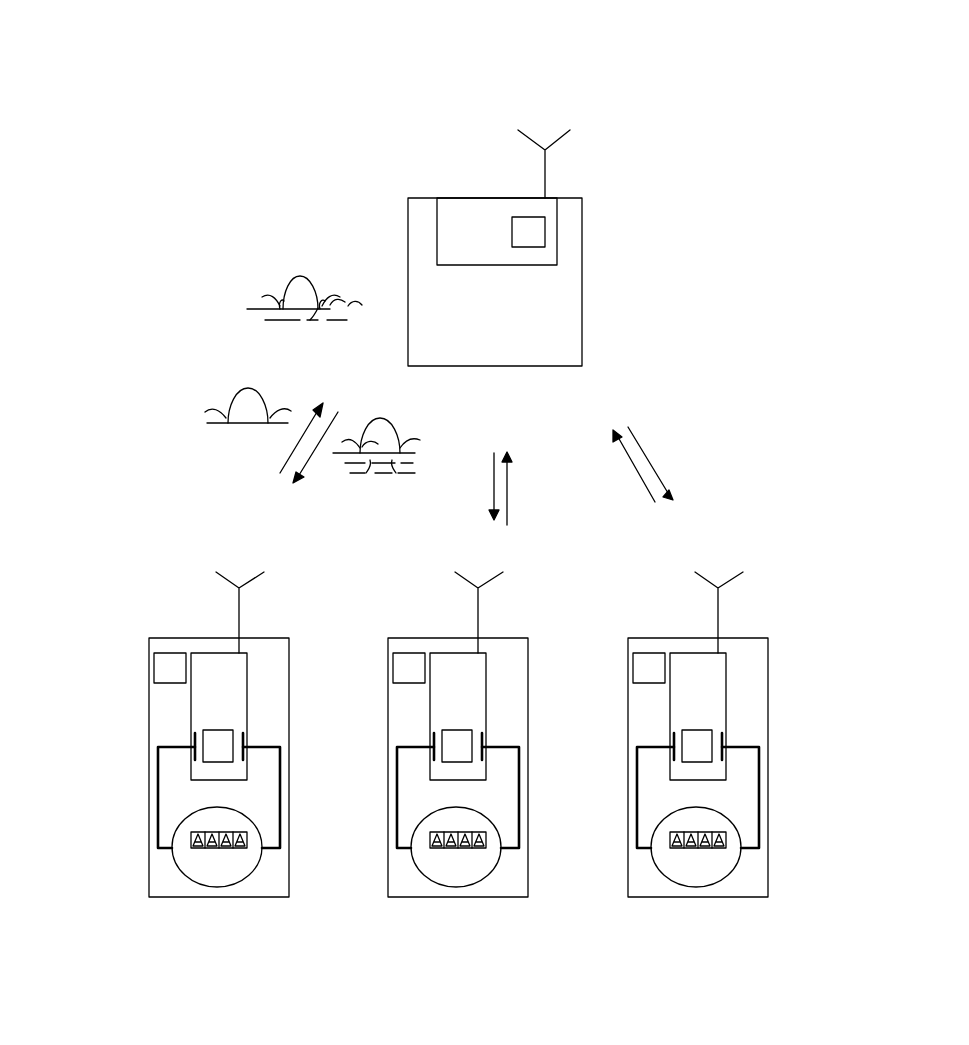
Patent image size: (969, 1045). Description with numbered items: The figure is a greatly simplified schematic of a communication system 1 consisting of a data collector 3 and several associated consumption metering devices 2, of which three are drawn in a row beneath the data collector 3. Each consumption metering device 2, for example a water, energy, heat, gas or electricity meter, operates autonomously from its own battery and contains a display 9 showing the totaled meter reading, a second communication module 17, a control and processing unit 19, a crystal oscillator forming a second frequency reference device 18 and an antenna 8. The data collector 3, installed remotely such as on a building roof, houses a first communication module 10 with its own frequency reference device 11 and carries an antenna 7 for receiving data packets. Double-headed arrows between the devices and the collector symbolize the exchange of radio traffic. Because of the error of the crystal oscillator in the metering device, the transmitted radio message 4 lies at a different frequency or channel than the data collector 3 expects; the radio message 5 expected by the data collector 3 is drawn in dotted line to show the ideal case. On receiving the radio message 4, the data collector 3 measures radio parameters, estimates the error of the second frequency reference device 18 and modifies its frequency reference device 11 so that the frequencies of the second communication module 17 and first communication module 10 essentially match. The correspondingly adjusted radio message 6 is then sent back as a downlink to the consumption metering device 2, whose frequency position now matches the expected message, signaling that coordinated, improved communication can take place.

The communication system 1 is at (400, 46).
The consumption metering device 2 is at (409, 774).
The data collector 3 is at (554, 241).
The radio message 4 is at (290, 278).
The radio message expected by the data collector 5 is at (323, 287).
The adjusted radio message 6 is at (387, 422).
The antenna of the data collector 7 is at (546, 164).
The antenna 8 is at (267, 611).
The display 9 is at (217, 899).
The first communication module 10 is at (478, 199).
The frequency reference device 11 is at (546, 231).
The second communication module 17 is at (186, 668).
The second frequency reference device 18 is at (275, 724).
The control and processing unit 19 is at (119, 647).